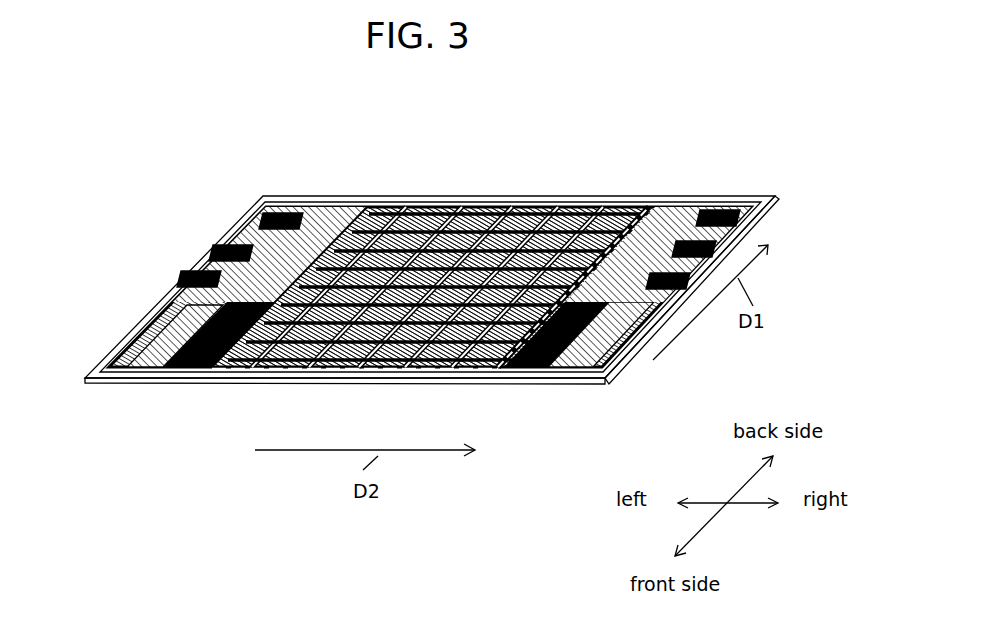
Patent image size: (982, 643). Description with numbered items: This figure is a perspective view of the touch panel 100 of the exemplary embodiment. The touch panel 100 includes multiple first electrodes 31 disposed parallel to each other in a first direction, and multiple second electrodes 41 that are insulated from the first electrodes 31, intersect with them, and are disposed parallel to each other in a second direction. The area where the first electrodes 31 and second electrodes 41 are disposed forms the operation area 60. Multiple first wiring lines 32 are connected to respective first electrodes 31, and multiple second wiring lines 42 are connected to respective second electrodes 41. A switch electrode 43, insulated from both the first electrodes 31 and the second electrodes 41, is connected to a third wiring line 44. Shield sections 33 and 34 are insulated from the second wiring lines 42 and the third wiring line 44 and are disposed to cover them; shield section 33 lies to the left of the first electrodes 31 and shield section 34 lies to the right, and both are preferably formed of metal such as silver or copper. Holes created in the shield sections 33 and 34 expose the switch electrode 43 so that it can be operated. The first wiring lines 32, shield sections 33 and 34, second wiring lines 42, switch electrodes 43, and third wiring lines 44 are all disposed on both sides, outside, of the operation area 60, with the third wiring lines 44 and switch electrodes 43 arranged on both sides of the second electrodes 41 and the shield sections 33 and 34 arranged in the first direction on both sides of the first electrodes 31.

The touch panel 100 is at (667, 140).
The first electrodes 31 is at (467, 190).
The first wiring lines 32 is at (375, 372).
The shield section 33 is at (133, 368).
The shield section 34 is at (557, 372).
The second electrodes 41 is at (370, 192).
The second wiring lines 42 is at (512, 372).
The switch electrode 43 is at (725, 190).
The third wiring line 44 is at (605, 366).
The operation area 60 is at (573, 190).